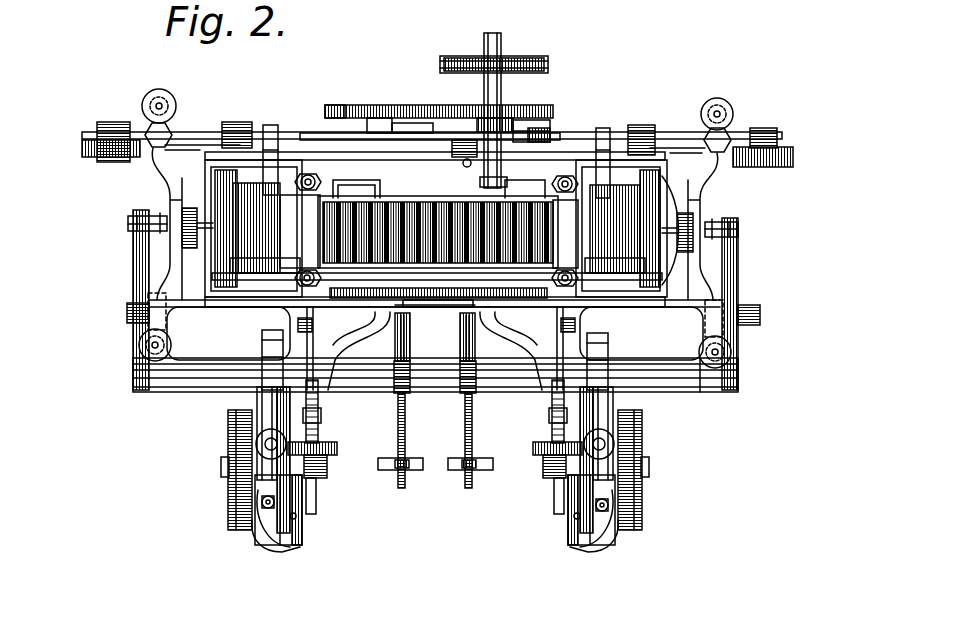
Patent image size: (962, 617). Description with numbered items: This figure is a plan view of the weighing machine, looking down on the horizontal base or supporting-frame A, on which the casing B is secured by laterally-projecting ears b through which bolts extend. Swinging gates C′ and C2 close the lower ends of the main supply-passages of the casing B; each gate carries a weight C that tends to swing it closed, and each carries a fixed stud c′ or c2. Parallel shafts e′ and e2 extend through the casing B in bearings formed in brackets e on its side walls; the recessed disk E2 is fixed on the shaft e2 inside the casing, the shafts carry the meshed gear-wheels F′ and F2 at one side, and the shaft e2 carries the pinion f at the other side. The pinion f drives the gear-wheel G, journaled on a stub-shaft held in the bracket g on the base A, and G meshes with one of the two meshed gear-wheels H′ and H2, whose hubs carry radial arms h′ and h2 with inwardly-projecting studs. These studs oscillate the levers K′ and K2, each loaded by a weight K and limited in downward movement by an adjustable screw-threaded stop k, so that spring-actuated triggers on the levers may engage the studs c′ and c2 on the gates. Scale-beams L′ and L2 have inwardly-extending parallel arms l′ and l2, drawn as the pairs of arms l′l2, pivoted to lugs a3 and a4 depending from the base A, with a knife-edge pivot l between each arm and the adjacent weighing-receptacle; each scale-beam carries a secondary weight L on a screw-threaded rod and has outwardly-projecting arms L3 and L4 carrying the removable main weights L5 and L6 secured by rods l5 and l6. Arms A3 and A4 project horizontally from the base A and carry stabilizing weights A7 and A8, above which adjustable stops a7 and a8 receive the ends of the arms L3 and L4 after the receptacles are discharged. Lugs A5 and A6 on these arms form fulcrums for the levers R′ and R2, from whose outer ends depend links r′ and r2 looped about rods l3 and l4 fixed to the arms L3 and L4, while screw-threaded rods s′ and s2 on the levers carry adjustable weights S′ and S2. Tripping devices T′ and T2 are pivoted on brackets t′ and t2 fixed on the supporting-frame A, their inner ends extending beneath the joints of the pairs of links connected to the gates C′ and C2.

The pinion f is at (505, 112).
The gear-wheel F′ is at (526, 60).
The gear-wheel G is at (440, 105).
The gear-wheel H′ is at (338, 104).
The gear-wheel H2 is at (556, 110).
The radial arm h2 is at (552, 130).
The radial arm h′ is at (394, 126).
The shaft e′ is at (375, 138).
The bracket g is at (450, 152).
The weight K is at (95, 150).
The lever K′ is at (205, 130).
The lever K2 is at (672, 134).
The screw-threaded stop k is at (172, 102).
The stud c′ is at (270, 125).
The stud c2 is at (605, 128).
The base or supporting-frame A is at (712, 176).
The weight C is at (188, 206).
The knife-edge pivot l is at (155, 215).
The arm l′ is at (133, 278).
The arm l2 is at (738, 275).
The lug a3 is at (135, 318).
The lug a4 is at (745, 318).
The pivot a is at (733, 352).
The casing B is at (270, 232).
The ears b is at (564, 178).
The disk E2 is at (538, 233).
The bracket e is at (350, 190).
The shaft e2 is at (512, 190).
The swinging gate C′ is at (232, 270).
The swinging gate C2 is at (630, 272).
The scale-beam L′ is at (170, 395).
The scale-beam L2 is at (700, 398).
The tripping device T′ is at (348, 348).
The tripping device T2 is at (550, 355).
The bracket t′ is at (296, 325).
The bracket t2 is at (575, 325).
The gear-wheel F2 is at (462, 300).
The secondary weight L is at (458, 464).
The parallel arms of the scale-beams l′l2 is at (465, 358).
The arm A3 is at (295, 412).
The main weight L5 is at (237, 445).
The bolt or rod l5 is at (226, 465).
The weight S′ is at (335, 446).
The screw-threaded rod s′ is at (320, 430).
The lug A5 is at (320, 466).
The arm L3 is at (258, 484).
The lever R′ is at (318, 486).
The link r′ is at (315, 497).
The rod l3 is at (310, 508).
The stop a7 is at (255, 540).
The weight A7 is at (266, 548).
The arm A4 is at (575, 412).
The main weight L6 is at (645, 505).
The bolt or rod l6 is at (650, 468).
The weight S2 is at (535, 446).
The screw-threaded rod s2 is at (548, 428).
The lug A6 is at (548, 470).
The arm L4 is at (640, 460).
The lever R2 is at (552, 488).
The link r2 is at (552, 500).
The rod l4 is at (560, 512).
The stop a8 is at (602, 520).
The weight A8 is at (615, 540).